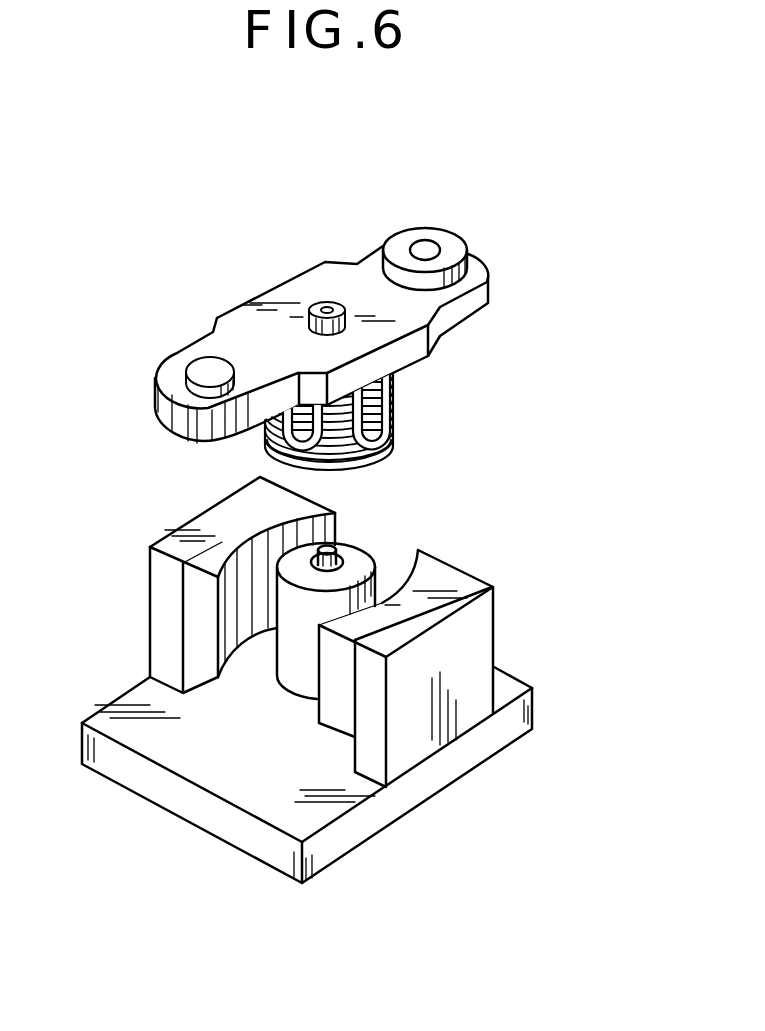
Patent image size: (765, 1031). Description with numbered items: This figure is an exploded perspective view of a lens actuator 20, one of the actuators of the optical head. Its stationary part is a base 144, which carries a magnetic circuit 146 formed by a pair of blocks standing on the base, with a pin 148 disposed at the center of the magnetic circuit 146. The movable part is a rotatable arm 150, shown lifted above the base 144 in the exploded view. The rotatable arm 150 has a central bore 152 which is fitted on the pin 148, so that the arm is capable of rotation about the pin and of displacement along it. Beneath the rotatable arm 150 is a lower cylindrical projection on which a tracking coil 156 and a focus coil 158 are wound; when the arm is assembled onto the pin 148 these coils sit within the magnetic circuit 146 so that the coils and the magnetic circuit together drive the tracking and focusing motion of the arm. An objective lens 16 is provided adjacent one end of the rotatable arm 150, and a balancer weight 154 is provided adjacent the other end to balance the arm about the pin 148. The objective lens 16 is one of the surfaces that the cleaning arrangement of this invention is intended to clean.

The objective lens 16 is at (422, 246).
The electromagnetic actuator 20 is at (330, 661).
The base 144 is at (452, 766).
The magnetic circuit 146 is at (452, 665).
The pin 148 is at (332, 543).
The rotatable arm 150 is at (275, 284).
The central bore 152 is at (326, 310).
The balancer weight 154 is at (207, 368).
The tracking coil 156 is at (378, 448).
The focus coil 158 is at (384, 382).